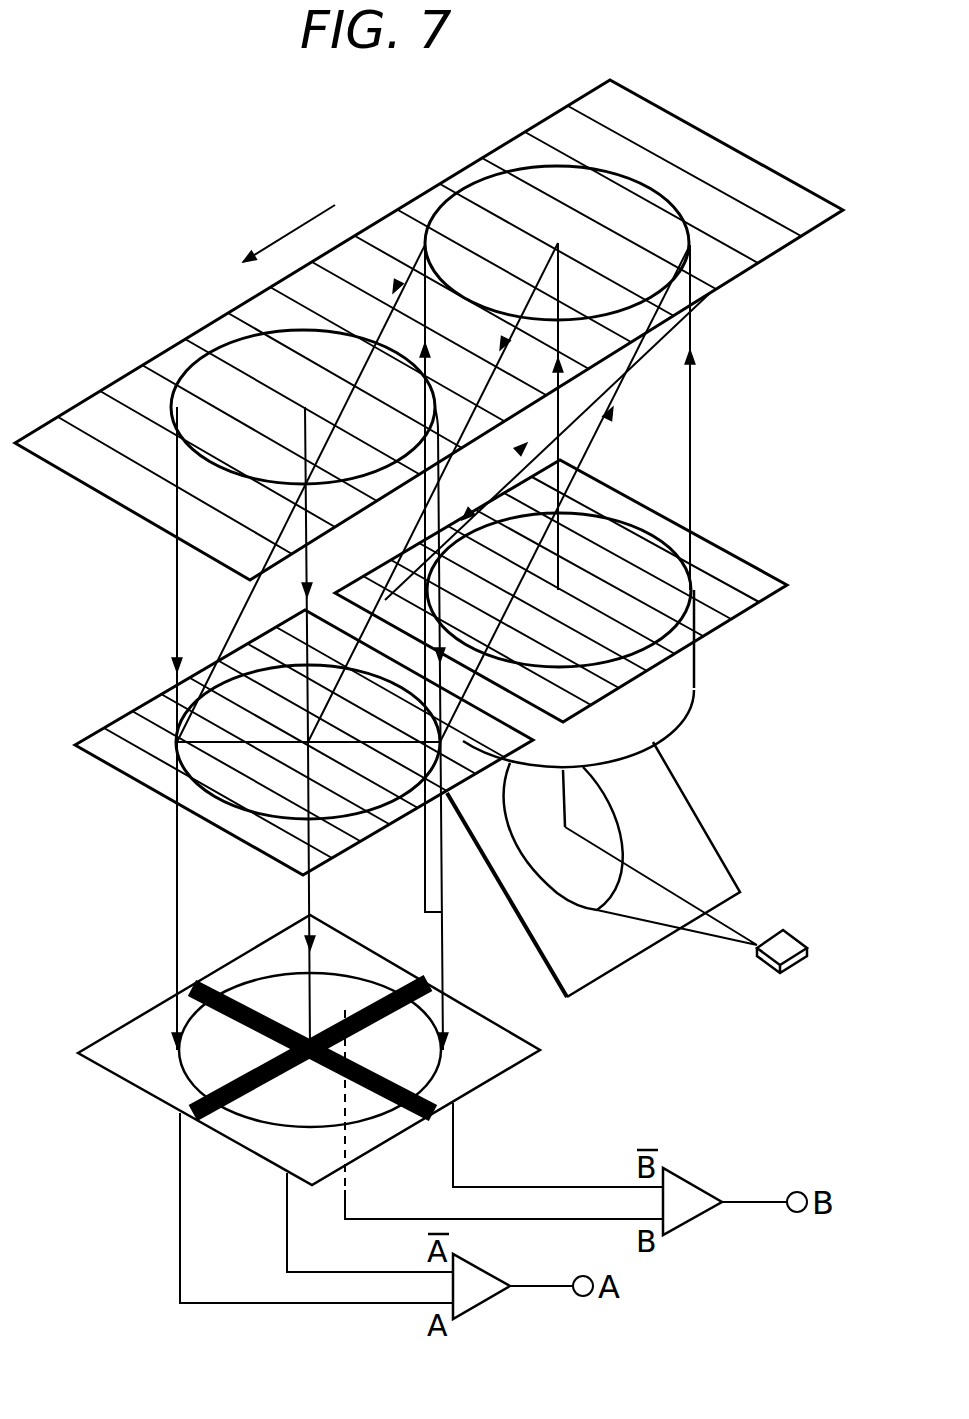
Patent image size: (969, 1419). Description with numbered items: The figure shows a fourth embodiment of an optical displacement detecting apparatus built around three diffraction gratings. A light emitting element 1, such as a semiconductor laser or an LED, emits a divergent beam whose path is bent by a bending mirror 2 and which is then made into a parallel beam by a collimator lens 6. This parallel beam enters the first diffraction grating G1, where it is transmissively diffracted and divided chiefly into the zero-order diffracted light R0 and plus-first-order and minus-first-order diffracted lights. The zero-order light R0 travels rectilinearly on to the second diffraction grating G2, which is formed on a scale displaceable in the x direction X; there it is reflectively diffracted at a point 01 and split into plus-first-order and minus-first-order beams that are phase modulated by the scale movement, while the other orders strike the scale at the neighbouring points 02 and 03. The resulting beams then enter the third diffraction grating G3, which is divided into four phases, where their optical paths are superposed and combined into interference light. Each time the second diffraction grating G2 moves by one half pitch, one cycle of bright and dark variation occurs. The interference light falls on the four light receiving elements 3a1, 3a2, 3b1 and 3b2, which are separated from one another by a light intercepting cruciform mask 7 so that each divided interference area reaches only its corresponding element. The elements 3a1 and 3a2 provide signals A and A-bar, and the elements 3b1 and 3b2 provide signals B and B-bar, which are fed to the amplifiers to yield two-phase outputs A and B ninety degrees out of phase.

The light emitting element 1 is at (790, 930).
The bending mirror 2 is at (705, 832).
The collimator lens 6 is at (695, 672).
The light intercepting cruciform mask 7 is at (423, 1117).
The light receiving element 3a1 is at (150, 1087).
The light receiving element 3a2 is at (252, 1142).
The light receiving element 3b1 is at (257, 960).
The light receiving element 3b2 is at (500, 1042).
The first diffraction grating G1 is at (730, 553).
The second diffraction grating G2 is at (750, 157).
The third diffraction grating G3 is at (143, 787).
The point on the second diffraction grating 01 is at (510, 170).
The beam spot on second grating 02 is at (240, 312).
The beam spot on third grating 03 is at (308, 738).
The 0-order diffracted light R0 is at (560, 405).
The x direction X is at (289, 230).